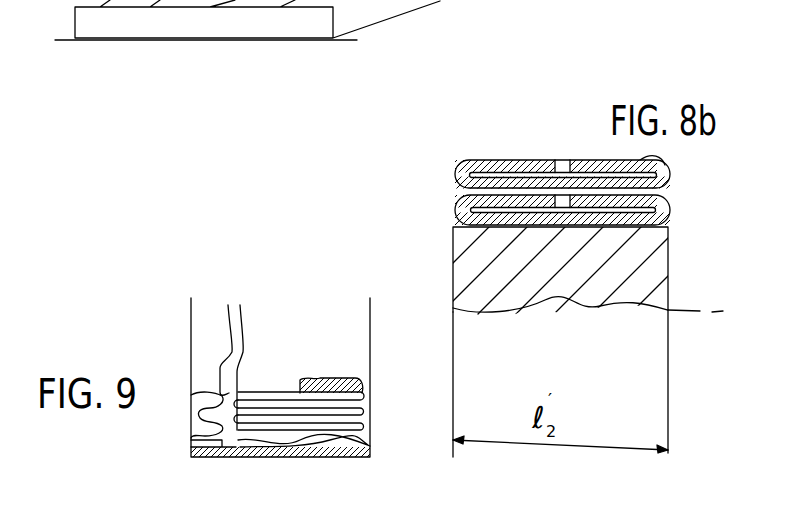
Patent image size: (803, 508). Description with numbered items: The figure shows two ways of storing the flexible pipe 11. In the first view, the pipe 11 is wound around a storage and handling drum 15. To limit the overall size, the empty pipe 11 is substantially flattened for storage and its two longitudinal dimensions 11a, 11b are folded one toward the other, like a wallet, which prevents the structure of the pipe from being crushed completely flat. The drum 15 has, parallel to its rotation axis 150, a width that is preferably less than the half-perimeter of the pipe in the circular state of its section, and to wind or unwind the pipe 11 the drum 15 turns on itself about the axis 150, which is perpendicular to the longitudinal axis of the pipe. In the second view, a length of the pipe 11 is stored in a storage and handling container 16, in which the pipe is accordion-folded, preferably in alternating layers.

In FIG. 8b, the pipe 11 is at (573, 134).
In FIG. 9, the pipe 11 is at (373, 407).
In FIG. 8b, the longitudinal dimension of the pipe 11a is at (532, 158).
In FIG. 8b, the longitudinal dimension of the pipe 11b is at (638, 160).
In FIG. 8b, the rotation axis 150 is at (452, 297).
In FIG. 8b, the drum 15 is at (636, 269).
In FIG. 9, the container 16 is at (182, 350).